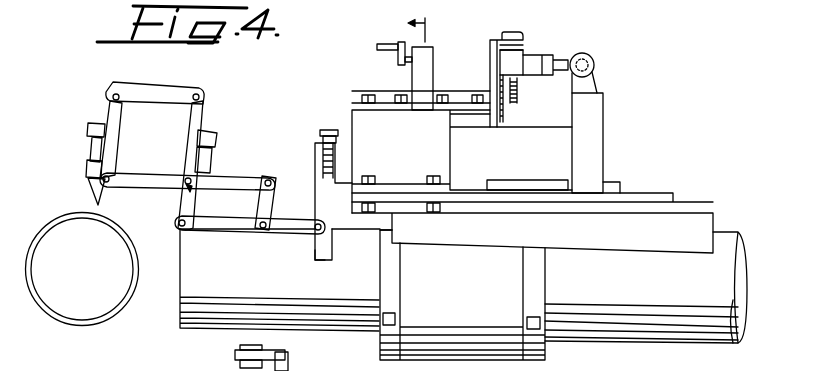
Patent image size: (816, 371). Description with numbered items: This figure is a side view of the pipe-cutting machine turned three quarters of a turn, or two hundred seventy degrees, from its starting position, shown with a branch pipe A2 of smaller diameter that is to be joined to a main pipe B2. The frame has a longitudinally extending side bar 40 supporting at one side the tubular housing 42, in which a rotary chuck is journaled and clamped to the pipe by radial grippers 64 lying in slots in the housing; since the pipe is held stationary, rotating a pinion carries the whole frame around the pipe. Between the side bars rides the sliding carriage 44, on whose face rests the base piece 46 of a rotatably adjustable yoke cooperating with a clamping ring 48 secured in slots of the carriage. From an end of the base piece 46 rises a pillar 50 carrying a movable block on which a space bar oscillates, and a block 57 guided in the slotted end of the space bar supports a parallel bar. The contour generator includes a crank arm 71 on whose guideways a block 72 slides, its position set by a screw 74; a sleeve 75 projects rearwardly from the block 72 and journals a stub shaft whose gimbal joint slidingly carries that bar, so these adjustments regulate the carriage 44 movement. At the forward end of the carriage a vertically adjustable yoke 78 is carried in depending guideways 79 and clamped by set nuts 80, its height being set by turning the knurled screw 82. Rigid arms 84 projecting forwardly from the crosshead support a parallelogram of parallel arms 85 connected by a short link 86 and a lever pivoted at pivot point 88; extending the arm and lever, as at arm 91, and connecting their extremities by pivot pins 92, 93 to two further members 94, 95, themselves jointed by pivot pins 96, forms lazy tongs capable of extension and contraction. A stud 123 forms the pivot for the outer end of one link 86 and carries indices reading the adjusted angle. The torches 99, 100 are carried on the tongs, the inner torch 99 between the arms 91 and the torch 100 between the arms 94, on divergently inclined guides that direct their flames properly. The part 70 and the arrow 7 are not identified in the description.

The section arrow 7 is at (426, 30).
The side bar 40 is at (680, 212).
The tubular housing 42 is at (462, 295).
The sliding carriage 44 is at (381, 223).
The base piece 46 is at (462, 152).
The clamping ring 48 is at (527, 183).
The pillar 50 is at (603, 148).
The block 57 is at (592, 80).
The radial grippers 64 is at (395, 320).
The handle 70 is at (382, 48).
The crank arm 71 is at (490, 62).
The block 72 is at (518, 57).
The screw 74 is at (517, 95).
The sleeve 75 is at (540, 75).
The vertically adjustable yoke 78 is at (319, 150).
The guideways 79 is at (318, 262).
The set nuts 80 is at (323, 230).
The screw 82 is at (330, 130).
The rigid arms 84 is at (288, 232).
The parallel arms 85 is at (245, 184).
The short link 86 is at (270, 207).
The pivot point 88 is at (179, 223).
The arm 91 is at (200, 118).
The pivot pin 92 is at (89, 184).
The pivot pin 93 is at (199, 96).
The member 94 is at (111, 152).
The member 95 is at (176, 72).
The pivot pins 96 is at (113, 97).
The torch 99 is at (212, 157).
The torch 100 is at (90, 142).
The stud 123 is at (278, 167).
The branch pipe A2 is at (665, 323).
The main pipe B2 is at (50, 315).